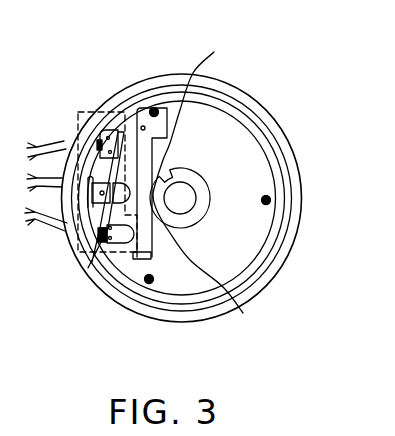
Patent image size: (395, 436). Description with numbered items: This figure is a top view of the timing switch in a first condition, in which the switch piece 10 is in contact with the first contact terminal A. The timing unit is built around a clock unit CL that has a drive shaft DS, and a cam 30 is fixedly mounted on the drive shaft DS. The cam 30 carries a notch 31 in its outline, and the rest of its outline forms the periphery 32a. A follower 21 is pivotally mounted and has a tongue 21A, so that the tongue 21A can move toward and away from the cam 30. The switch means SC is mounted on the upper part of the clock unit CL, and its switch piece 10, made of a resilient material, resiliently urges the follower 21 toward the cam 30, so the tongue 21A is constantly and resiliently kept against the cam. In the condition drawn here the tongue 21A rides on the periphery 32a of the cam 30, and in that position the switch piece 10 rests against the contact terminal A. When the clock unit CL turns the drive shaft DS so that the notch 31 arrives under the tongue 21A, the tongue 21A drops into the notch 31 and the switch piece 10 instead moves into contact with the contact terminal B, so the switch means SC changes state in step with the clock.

The switch piece 10 is at (113, 182).
The follower 21 is at (128, 125).
The tongue 21A is at (191, 115).
The notch 31 is at (173, 167).
The drive shaft DS is at (205, 186).
The cam 30 is at (202, 199).
The clock unit CL is at (302, 205).
The periphery of the cam 32a is at (212, 270).
The contact terminal A is at (93, 225).
The contact terminal B is at (124, 246).
The switch means SC is at (100, 250).